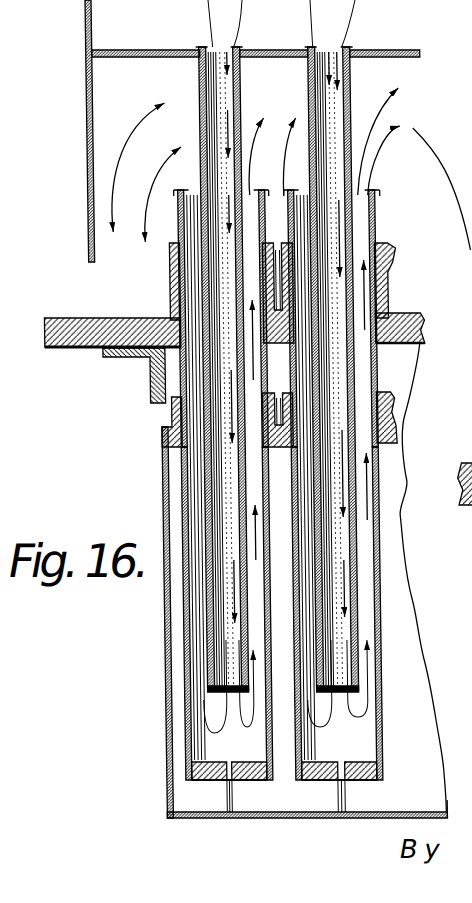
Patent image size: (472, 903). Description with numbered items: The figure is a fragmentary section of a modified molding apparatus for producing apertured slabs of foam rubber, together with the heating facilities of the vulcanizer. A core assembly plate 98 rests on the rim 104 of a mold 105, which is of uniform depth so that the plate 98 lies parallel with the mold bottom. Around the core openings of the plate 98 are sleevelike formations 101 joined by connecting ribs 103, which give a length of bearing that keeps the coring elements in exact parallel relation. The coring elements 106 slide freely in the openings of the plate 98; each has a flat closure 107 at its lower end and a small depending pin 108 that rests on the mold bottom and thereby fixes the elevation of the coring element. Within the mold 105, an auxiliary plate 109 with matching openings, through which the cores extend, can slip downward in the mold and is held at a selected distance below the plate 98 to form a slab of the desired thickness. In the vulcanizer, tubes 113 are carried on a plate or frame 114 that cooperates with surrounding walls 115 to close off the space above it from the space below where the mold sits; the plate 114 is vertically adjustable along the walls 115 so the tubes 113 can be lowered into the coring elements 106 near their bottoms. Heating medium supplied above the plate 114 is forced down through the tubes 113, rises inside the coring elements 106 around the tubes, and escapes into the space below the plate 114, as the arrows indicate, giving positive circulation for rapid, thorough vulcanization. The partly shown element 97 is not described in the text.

The housing 97 is at (441, 125).
The plate 98 is at (108, 318).
The sleevelike formations 101 is at (166, 265).
The connecting ribs 103 is at (393, 303).
The rim 104 is at (123, 355).
The mold 105 is at (155, 645).
The coring elements 106 is at (374, 560).
The flat closures 107 is at (190, 781).
The depending pins 108 is at (329, 797).
The auxiliary plate 109 is at (385, 396).
The tubes 113 is at (306, 74).
The plate or frame 114 is at (107, 57).
The surrounding walls 115 is at (85, 158).